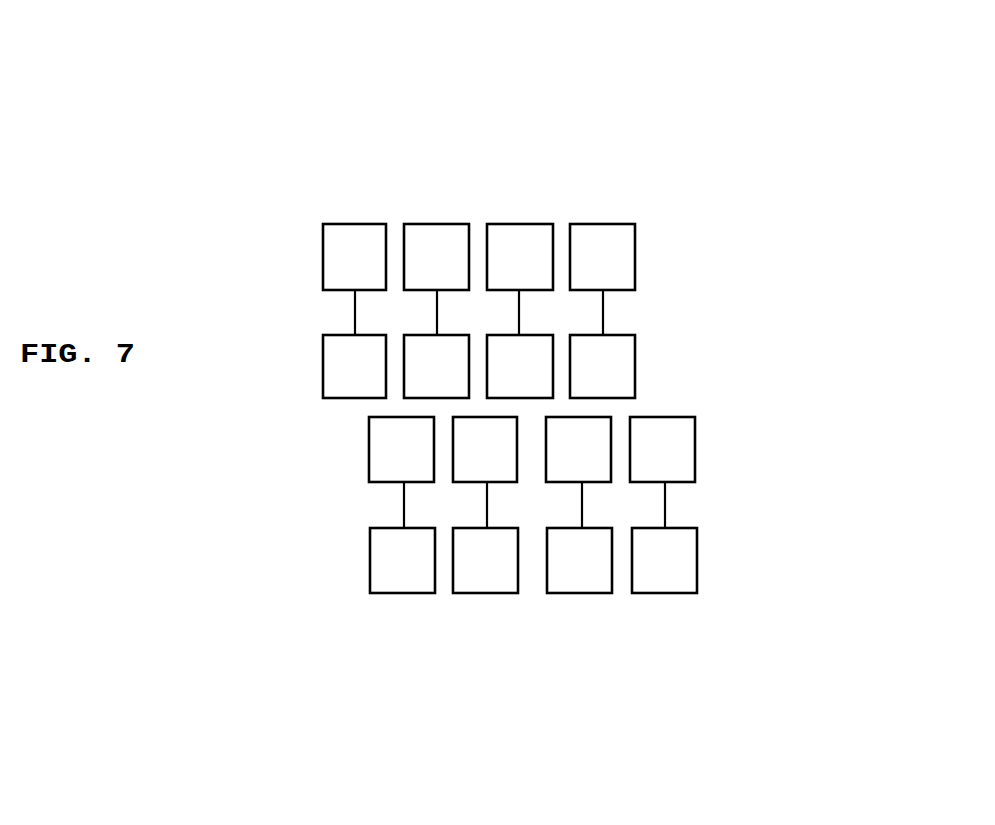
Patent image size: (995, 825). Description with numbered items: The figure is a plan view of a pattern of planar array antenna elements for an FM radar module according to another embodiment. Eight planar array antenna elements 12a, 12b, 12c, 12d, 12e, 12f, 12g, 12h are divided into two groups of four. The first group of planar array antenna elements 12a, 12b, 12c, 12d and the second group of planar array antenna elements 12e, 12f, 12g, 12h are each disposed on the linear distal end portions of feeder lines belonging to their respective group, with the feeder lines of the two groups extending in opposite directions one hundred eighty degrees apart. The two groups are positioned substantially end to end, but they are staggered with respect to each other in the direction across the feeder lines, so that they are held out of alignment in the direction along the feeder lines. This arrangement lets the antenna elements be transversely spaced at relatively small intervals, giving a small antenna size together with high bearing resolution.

The planar array antenna element 12a is at (355, 224).
The planar array antenna element 12b is at (437, 224).
The planar array antenna element 12c is at (519, 224).
The planar array antenna element 12d is at (603, 224).
The planar array antenna element 12e is at (405, 593).
The planar array antenna element 12f is at (487, 593).
The planar array antenna element 12g is at (582, 593).
The planar array antenna element 12h is at (665, 593).